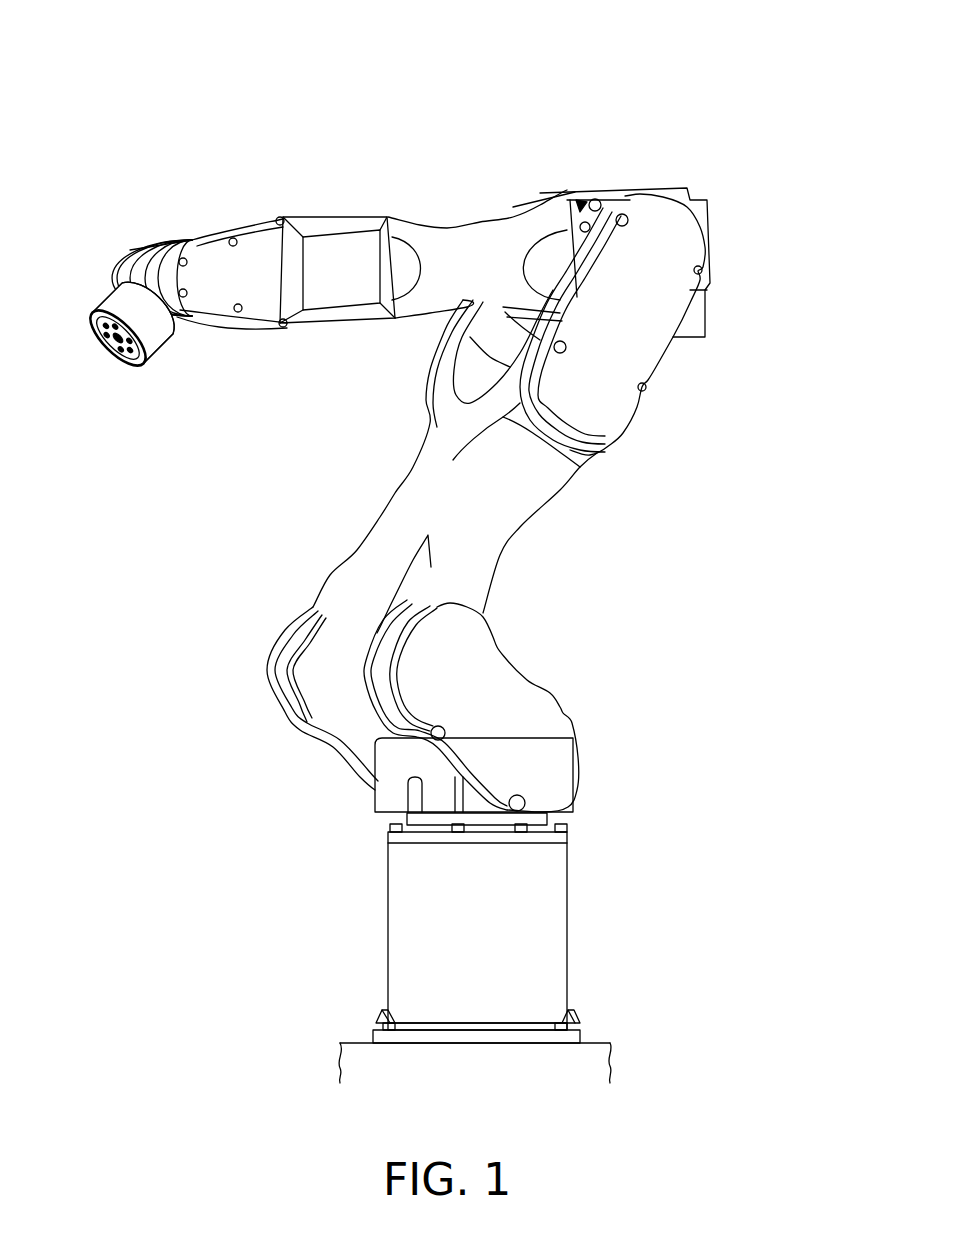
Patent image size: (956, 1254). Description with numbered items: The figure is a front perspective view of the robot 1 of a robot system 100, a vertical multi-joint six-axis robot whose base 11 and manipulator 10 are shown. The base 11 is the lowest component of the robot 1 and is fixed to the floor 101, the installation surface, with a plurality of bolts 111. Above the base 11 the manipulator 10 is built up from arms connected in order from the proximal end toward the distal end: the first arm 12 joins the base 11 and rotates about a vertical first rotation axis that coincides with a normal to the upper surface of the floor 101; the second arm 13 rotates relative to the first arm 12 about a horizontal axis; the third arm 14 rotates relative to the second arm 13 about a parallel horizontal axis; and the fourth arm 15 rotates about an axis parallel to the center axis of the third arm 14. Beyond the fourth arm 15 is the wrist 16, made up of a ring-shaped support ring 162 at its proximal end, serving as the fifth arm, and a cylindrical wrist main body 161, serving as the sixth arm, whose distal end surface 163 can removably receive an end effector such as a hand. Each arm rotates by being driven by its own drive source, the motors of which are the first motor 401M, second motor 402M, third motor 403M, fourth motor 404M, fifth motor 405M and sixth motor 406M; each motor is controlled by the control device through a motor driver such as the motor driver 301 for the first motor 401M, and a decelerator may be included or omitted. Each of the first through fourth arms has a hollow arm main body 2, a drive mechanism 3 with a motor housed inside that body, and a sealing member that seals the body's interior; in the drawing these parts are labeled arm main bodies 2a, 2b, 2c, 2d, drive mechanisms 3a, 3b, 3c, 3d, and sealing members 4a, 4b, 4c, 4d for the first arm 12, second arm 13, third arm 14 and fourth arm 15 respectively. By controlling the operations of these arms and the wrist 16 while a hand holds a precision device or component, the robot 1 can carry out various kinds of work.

The robot system 100 is at (718, 48).
The robot 1 is at (726, 94).
The manipulator 10 is at (742, 126).
The base 11 is at (577, 926).
The first arm 12 is at (328, 755).
The second arm 13 is at (422, 377).
The third arm 14 is at (716, 198).
The fourth arm 15 is at (277, 210).
The wrist 16 is at (136, 348).
The wrist main body 161 is at (139, 318).
The support ring 162 is at (148, 262).
The distal end surface 163 is at (96, 302).
The arm main body 2 is at (410, 698).
The arm main body of the first arm 2a is at (270, 695).
The arm main body of the second arm 2b is at (430, 450).
The arm main body of the third arm 2c is at (705, 283).
The arm main body of the fourth arm 2d is at (255, 228).
The drive mechanism 3 is at (450, 465).
The drive mechanism of the first arm 3a is at (485, 664).
The drive mechanism of the second arm 3b is at (622, 407).
The drive mechanism of the third arm 3c is at (580, 200).
The drive mechanism of the fourth arm 3d is at (311, 240).
The sealing member of the first arm 4a is at (258, 669).
The sealing member of the second arm 4b is at (430, 350).
The sealing member of the third arm 4c is at (720, 230).
The sealing member of the fourth arm 4d is at (190, 226).
The floor 101 is at (604, 1042).
The bolts 111 is at (383, 1013).
The motor driver 301 is at (430, 927).
The first motor 401M is at (420, 870).
The second motor 402M is at (492, 660).
The third motor 403M is at (672, 252).
The fourth motor 404M is at (612, 190).
The fifth motor 405M is at (449, 190).
The sixth motor 406M is at (330, 262).